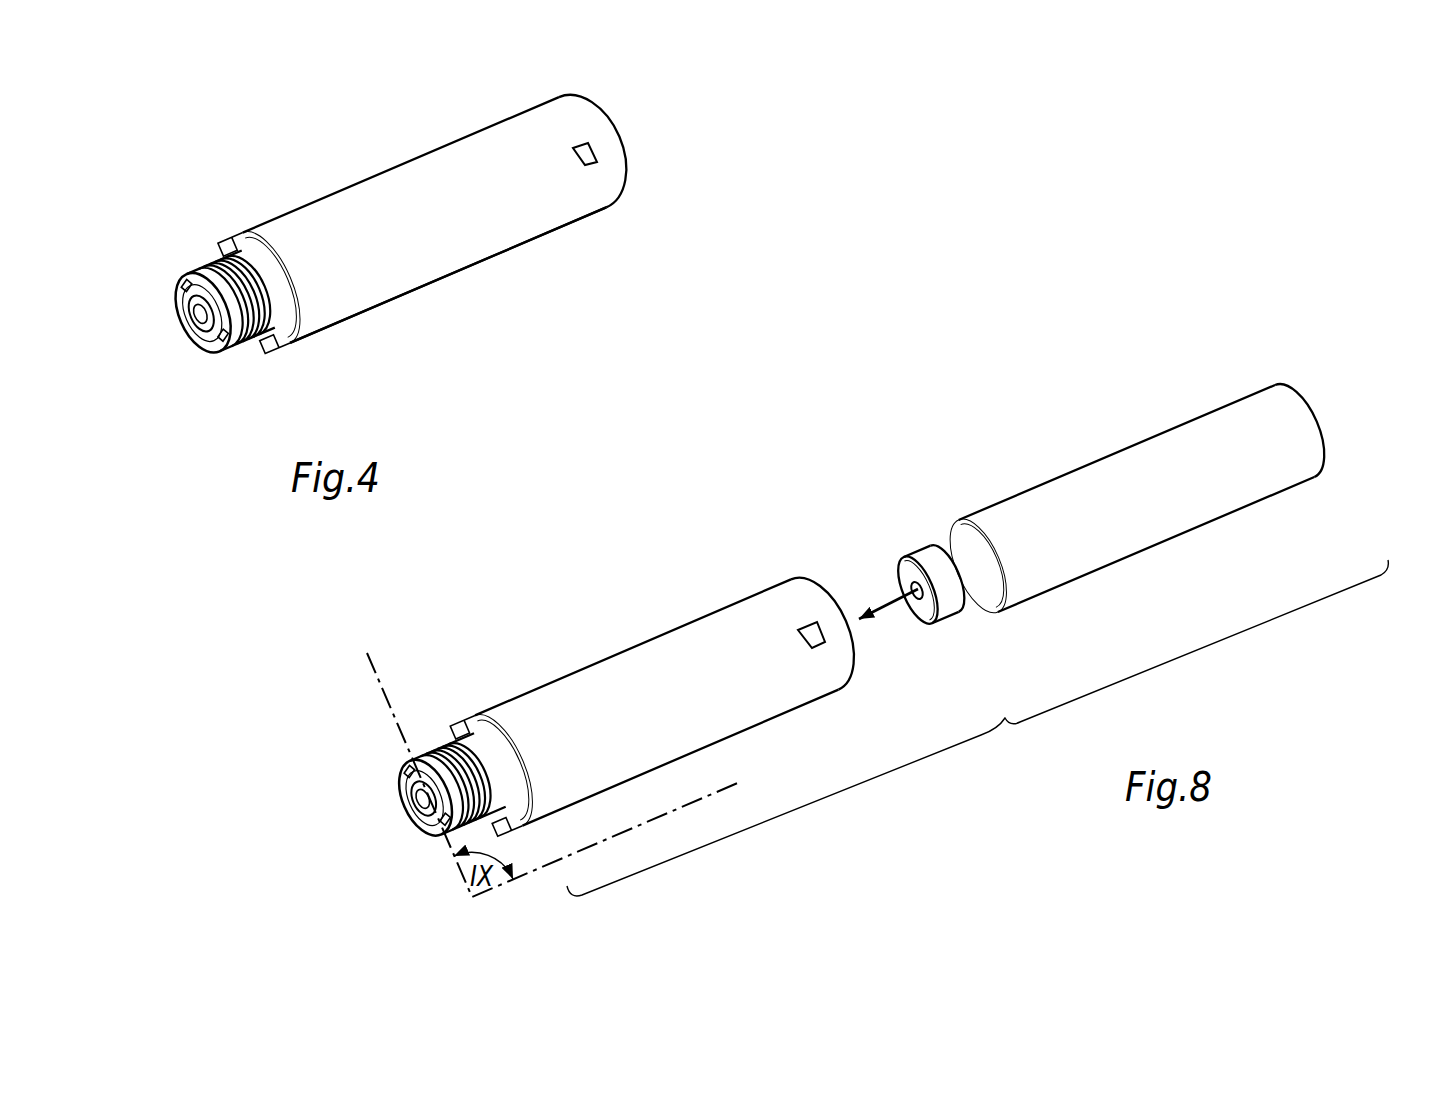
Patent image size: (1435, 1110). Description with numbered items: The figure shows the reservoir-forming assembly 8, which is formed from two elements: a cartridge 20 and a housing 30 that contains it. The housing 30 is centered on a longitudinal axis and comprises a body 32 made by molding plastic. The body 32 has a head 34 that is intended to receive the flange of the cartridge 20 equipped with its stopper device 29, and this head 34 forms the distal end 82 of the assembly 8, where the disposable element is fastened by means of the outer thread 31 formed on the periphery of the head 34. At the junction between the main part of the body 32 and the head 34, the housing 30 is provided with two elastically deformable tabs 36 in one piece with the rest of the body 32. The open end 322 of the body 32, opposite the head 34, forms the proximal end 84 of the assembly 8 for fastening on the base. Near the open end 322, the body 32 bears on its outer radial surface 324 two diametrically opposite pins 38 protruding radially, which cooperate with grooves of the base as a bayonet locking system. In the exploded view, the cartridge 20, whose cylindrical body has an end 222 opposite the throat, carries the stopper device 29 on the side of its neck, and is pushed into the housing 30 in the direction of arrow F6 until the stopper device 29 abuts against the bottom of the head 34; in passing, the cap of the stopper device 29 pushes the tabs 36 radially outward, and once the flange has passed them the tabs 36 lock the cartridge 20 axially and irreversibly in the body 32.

In FIG. 4, the reservoir-forming assembly 8 is at (411, 230).
In FIG. 8, the reservoir-forming assembly 8 is at (977, 728).
In FIG. 4, the proximal end 84 is at (598, 99).
In FIG. 4, the pin 38 is at (592, 151).
In FIG. 8, the pin 38 is at (817, 626).
In FIG. 4, the outer thread 31 is at (184, 270).
In FIG. 8, the outer thread 31 is at (452, 840).
In FIG. 4, the elastically deformable tab 36 is at (232, 250).
In FIG. 4, the body 32 is at (540, 205).
In FIG. 4, the outer radial surface 324 is at (422, 248).
In FIG. 4, the head 34 is at (195, 323).
In FIG. 8, the head 34 is at (420, 801).
In FIG. 4, the distal end 82 is at (236, 369).
In FIG. 8, the distal end 82 is at (424, 739).
In FIG. 8, the housing 30 is at (639, 691).
In FIG. 8, the open end 322 is at (860, 662).
In FIG. 8, the cartridge 20 is at (1135, 449).
In FIG. 8, the end of the body 222 is at (1326, 419).
In FIG. 8, the stopper device 29 is at (941, 556).
In FIG. 8, the arrow F6 is at (888, 595).